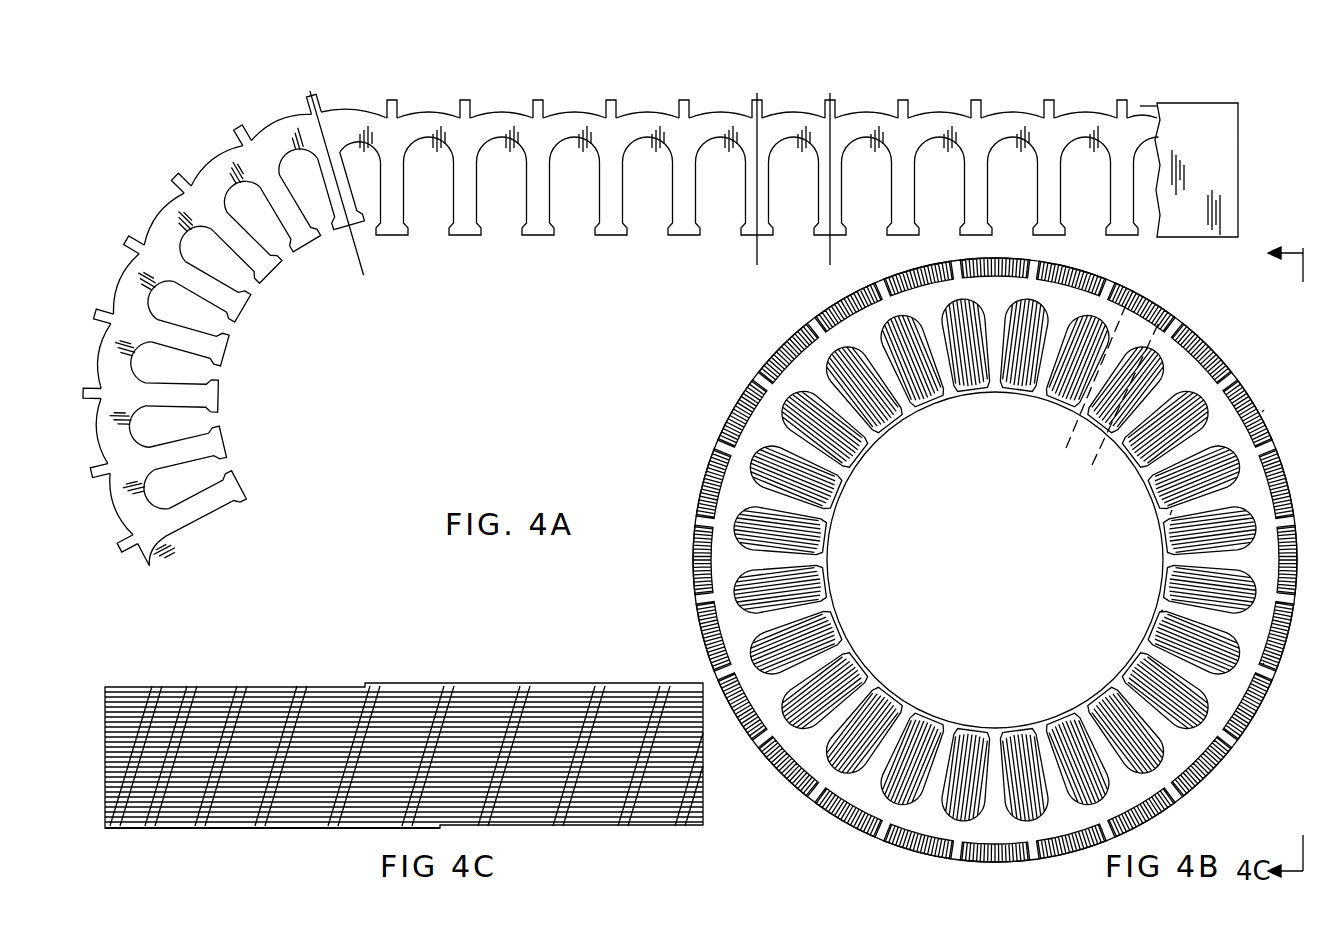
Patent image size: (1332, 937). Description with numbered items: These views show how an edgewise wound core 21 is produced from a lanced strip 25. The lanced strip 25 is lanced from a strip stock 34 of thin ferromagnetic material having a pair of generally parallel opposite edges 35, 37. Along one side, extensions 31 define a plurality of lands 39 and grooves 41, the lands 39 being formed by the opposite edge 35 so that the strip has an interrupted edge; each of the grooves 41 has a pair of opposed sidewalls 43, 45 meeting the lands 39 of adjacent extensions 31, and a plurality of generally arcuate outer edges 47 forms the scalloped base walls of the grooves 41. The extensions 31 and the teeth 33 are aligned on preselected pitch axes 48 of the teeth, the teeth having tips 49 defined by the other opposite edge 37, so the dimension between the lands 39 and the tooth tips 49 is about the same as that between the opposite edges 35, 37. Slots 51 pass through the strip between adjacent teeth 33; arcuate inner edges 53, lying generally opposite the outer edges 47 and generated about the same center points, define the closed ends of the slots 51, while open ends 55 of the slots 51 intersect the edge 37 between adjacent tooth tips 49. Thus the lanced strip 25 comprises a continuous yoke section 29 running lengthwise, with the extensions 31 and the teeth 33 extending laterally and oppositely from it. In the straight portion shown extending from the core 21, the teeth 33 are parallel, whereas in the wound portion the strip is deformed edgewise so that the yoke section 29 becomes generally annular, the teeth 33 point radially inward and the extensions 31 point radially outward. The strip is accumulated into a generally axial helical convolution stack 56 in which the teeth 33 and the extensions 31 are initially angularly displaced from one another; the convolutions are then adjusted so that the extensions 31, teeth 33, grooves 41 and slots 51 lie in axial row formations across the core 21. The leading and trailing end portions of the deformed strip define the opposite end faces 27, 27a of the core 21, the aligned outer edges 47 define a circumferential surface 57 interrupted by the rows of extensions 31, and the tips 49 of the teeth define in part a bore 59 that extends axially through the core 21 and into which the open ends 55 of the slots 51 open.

In FIG. 4A, the core 21 is at (302, 500).
In FIG. 4A, the lanced strip 25 is at (1076, 243).
In FIG. 4C, the opposite end face 27 is at (152, 686).
In FIG. 4C, the opposite end face 27a is at (122, 828).
In FIG. 4A, the continuous yoke section 29 is at (944, 130).
In FIG. 4B, the continuous yoke section 29 is at (1262, 665).
In FIG. 4A, the extensions 31 is at (172, 200).
In FIG. 4B, the extensions 31 is at (1262, 410).
In FIG. 4C, the extensions 31 is at (350, 826).
In FIG. 4A, the teeth 33 is at (222, 289).
In FIG. 4B, the teeth 33 is at (1168, 515).
In FIG. 4A, the strip stock 34 is at (1222, 165).
In FIG. 4A, the opposite edge 35 is at (1215, 105).
In FIG. 4A, the opposite edge 37 is at (1212, 242).
In FIG. 4A, the lands 39 is at (185, 188).
In FIG. 4A, the grooves 41 is at (280, 120).
In FIG. 4A, the opposed sidewall 43 is at (253, 132).
In FIG. 4A, the opposed sidewall 45 is at (312, 124).
In FIG. 4A, the arcuate outer edges 47 is at (216, 168).
In FIG. 4A, the pitch axes 48 is at (364, 276).
In FIG. 4B, the pitch axes 48 is at (1095, 460).
In FIG. 4A, the tooth tips 49 is at (250, 315).
In FIG. 4B, the tooth tips 49 is at (1165, 612).
In FIG. 4A, the slots 51 is at (185, 320).
In FIG. 4A, the arcuate inner edges 53 is at (240, 190).
In FIG. 4A, the open ends 55 is at (292, 262).
In FIG. 4B, the helical convolution stack 56 is at (1206, 800).
In FIG. 4C, the helical convolution stack 56 is at (264, 839).
In FIG. 4A, the circumferential surface 57 is at (130, 520).
In FIG. 4A, the bore 59 is at (232, 440).